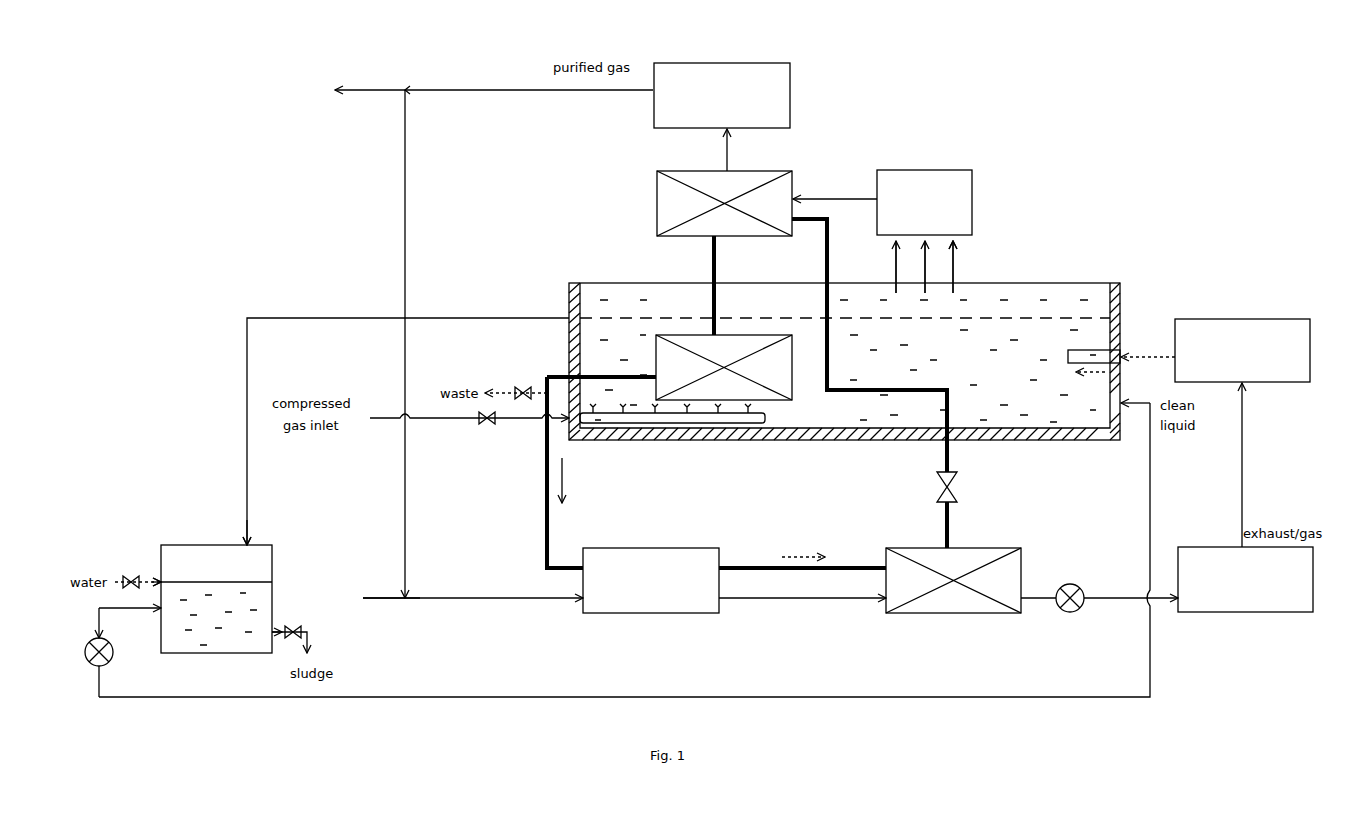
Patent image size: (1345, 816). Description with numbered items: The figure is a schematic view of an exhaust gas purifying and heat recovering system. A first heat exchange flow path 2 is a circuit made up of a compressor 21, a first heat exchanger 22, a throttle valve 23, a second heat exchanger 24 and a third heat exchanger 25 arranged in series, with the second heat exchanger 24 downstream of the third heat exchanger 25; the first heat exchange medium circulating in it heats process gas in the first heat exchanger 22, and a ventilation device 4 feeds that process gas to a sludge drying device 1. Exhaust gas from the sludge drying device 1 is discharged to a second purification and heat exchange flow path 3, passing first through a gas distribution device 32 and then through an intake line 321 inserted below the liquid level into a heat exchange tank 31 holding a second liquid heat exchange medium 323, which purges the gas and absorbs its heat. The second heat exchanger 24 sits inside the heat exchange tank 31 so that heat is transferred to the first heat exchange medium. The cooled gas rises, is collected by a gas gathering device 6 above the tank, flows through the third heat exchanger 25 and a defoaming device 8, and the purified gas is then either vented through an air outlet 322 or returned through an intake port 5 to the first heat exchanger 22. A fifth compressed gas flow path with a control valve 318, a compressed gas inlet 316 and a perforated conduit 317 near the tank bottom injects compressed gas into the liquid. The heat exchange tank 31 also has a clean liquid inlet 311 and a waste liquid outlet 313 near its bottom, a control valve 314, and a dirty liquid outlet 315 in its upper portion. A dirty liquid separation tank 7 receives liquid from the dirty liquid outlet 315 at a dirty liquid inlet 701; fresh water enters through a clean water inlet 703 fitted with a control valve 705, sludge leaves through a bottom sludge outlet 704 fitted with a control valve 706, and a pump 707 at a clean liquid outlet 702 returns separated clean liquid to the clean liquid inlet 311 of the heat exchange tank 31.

The sludge drying device 1 is at (1238, 614).
The first heat exchange flow path 2 is at (529, 477).
The second purification and heat exchange flow path 3 is at (1035, 452).
The ventilation device 4 is at (1070, 613).
The intake port 5 is at (380, 596).
The gas gathering device 6 is at (877, 183).
The dirty liquid separation tank 7 is at (273, 568).
The defoaming device 8 is at (791, 68).
The compressor 21 is at (630, 614).
The first heat exchanger 22 is at (958, 614).
The throttle valve 23 is at (958, 490).
The second heat exchanger 24 is at (735, 333).
The third heat exchanger 25 is at (657, 193).
The heat exchange tank 31 is at (770, 442).
The gas distribution device 32 is at (1248, 318).
The clean liquid inlet 311 is at (1124, 410).
The waste liquid outlet 313 is at (575, 380).
The control valve 314 is at (514, 388).
The dirty liquid outlet 315 is at (572, 313).
The compressed gas inlet 316 is at (562, 420).
The conduit 317 is at (672, 424).
The control valve 318 is at (487, 425).
The intake line 321 is at (1100, 350).
The air outlet 322 is at (457, 330).
The second liquid heat exchange medium 323 is at (633, 330).
The dirty liquid inlet 701 is at (250, 545).
The clean liquid outlet 702 is at (158, 612).
The clean water inlet 703 is at (156, 585).
The sludge outlet 704 is at (293, 626).
The control valve 705 is at (125, 588).
The control valve 706 is at (290, 638).
The pump 707 is at (85, 650).